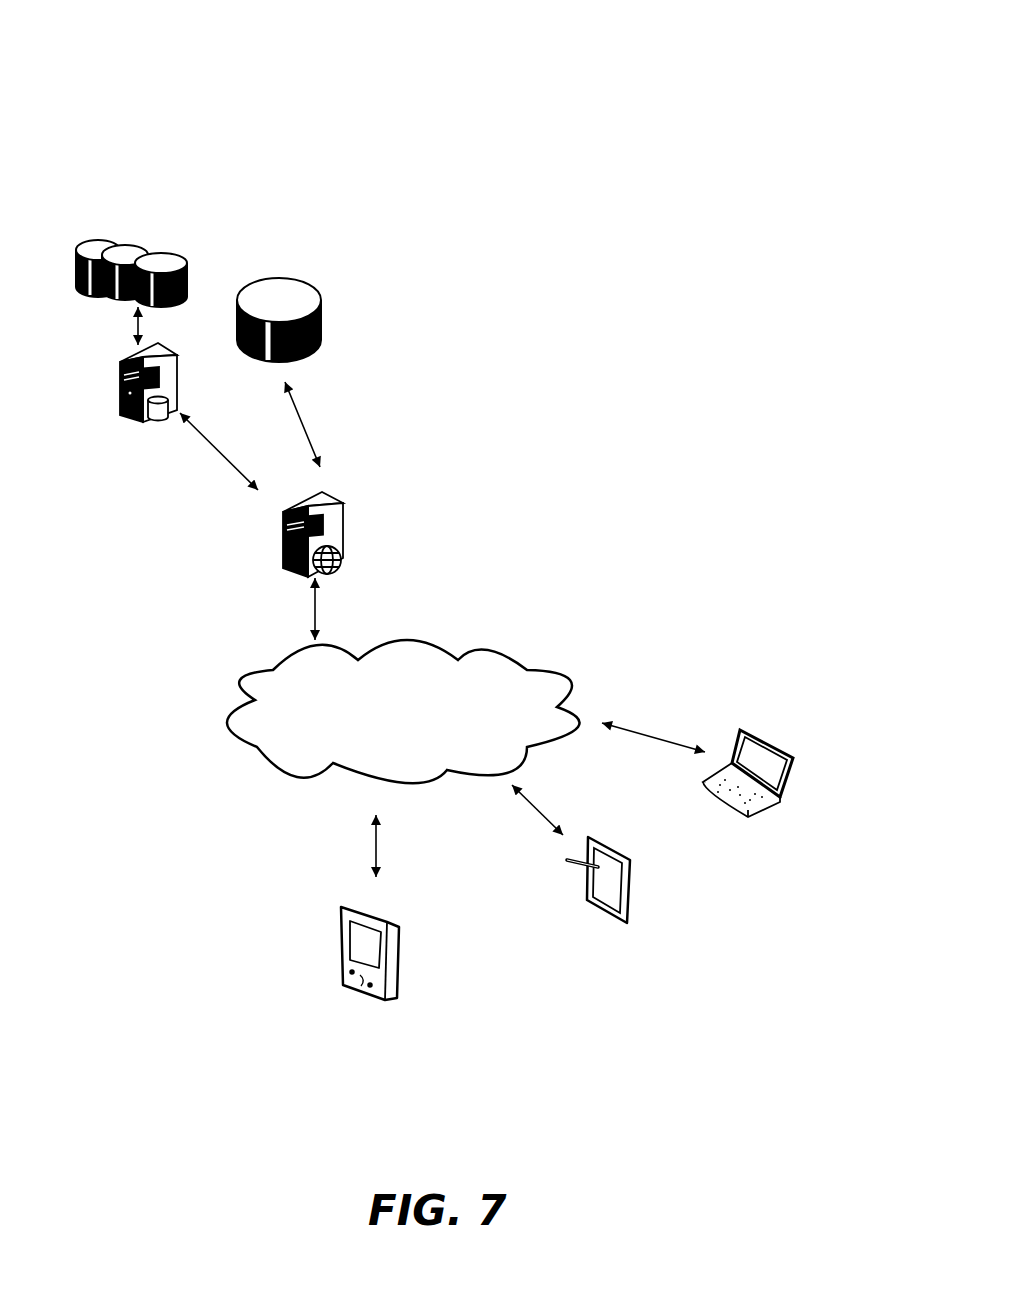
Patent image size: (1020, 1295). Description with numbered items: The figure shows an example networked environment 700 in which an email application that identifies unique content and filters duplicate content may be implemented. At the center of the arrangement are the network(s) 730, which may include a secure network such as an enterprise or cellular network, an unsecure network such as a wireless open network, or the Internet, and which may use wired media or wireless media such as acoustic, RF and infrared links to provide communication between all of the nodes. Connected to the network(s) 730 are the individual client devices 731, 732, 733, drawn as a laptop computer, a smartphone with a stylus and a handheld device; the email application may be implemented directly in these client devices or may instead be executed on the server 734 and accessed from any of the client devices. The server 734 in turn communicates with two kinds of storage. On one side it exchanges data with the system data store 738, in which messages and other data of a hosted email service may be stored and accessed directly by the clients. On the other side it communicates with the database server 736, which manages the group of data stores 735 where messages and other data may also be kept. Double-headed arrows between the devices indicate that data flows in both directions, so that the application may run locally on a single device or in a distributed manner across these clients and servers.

The networked environment 700 is at (732, 63).
The network(s) 730 is at (379, 746).
The client device 731 is at (777, 730).
The client device 732 is at (612, 830).
The client device 733 is at (400, 898).
The server 734 is at (270, 557).
The data stores 735 is at (147, 233).
The database server 736 is at (155, 423).
The data store 738 is at (278, 258).